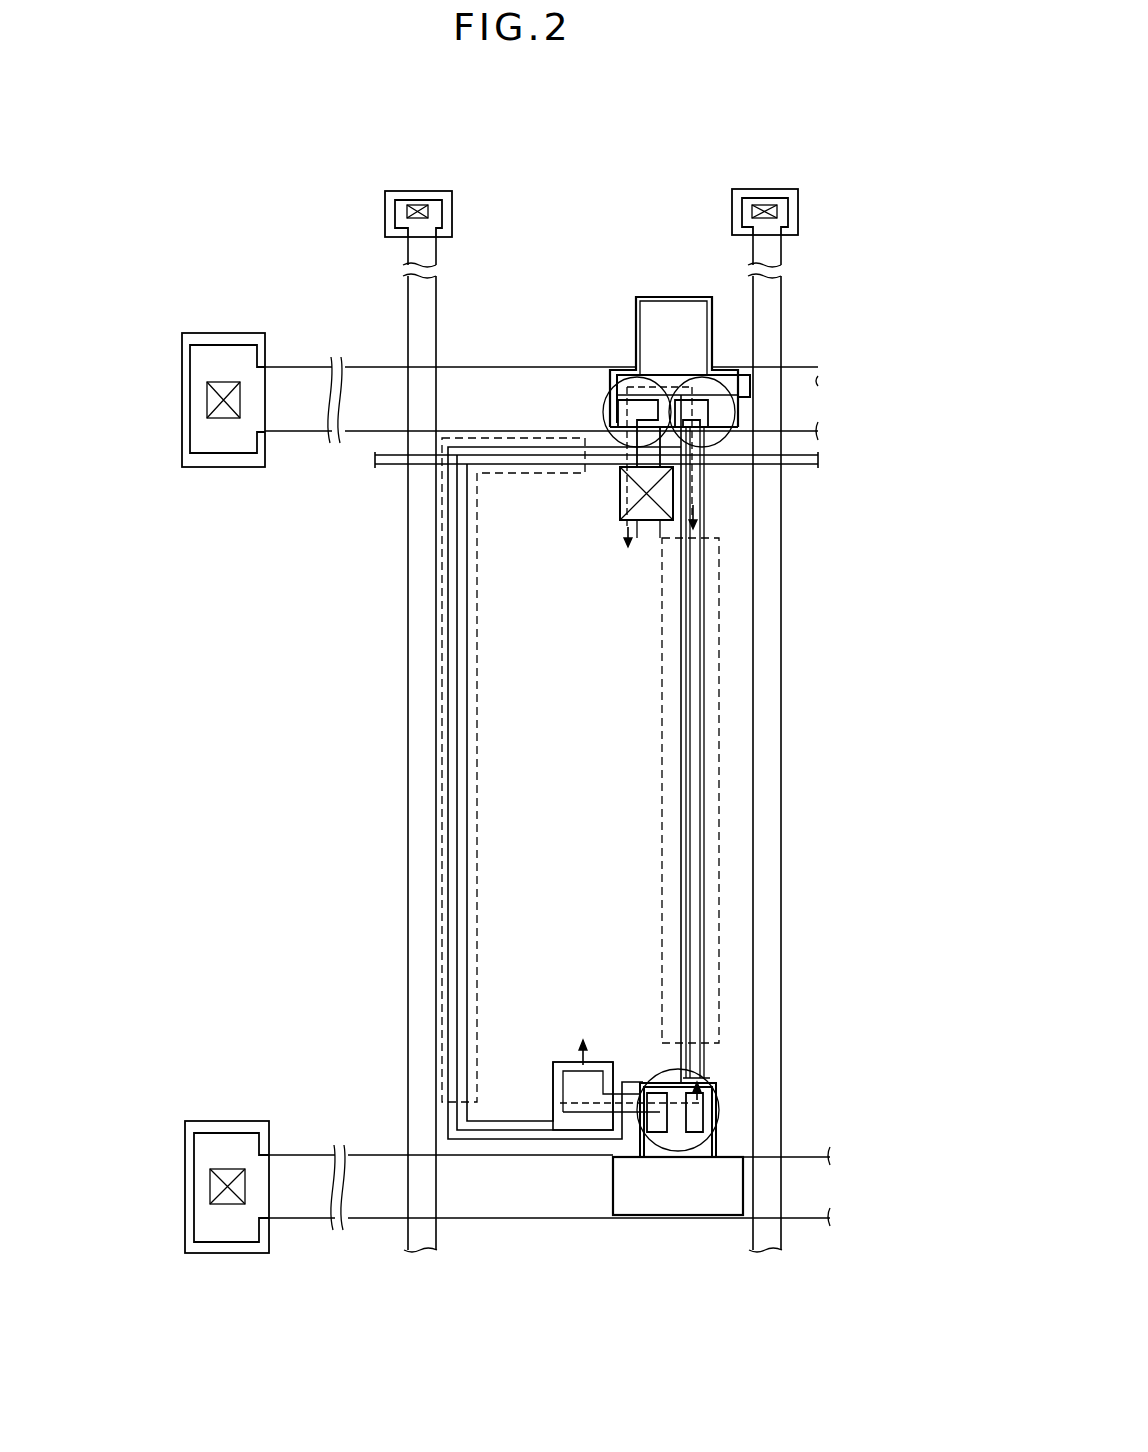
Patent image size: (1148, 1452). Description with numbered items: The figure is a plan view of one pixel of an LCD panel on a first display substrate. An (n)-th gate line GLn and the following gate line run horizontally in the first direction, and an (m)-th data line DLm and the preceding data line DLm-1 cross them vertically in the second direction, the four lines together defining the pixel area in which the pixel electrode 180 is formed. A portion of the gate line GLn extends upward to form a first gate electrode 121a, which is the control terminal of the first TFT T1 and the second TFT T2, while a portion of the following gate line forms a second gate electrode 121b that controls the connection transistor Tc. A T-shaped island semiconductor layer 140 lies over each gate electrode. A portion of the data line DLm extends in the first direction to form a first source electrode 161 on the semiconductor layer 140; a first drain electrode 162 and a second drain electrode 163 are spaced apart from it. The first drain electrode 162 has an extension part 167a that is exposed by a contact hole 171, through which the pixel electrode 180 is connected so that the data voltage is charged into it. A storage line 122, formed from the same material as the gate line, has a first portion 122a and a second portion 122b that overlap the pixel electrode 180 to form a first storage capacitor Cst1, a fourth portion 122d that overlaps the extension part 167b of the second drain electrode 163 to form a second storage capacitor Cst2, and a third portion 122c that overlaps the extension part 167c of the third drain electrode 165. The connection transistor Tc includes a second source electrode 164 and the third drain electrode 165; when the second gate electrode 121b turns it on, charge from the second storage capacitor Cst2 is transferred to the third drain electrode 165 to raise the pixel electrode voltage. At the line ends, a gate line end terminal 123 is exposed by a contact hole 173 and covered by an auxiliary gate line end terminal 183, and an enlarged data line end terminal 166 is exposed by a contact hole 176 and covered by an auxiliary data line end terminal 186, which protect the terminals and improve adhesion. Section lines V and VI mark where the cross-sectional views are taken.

The contact hole 176 is at (418, 205).
The auxiliary data line end terminal 186 is at (385, 212).
The data line end terminal 166 is at (452, 212).
The gate line end terminal 123 is at (222, 345).
The contact hole 173 is at (207, 400).
The auxiliary gate line end terminal 183 is at (222, 467).
The first portion 122a is at (500, 465).
The first source electrode 161 is at (620, 380).
The semiconductor layer 140 is at (612, 384).
The first drain electrode 162 is at (616, 415).
The first gate electrode 121a is at (714, 338).
The second drain electrode 163 is at (710, 415).
The storage line 122 is at (820, 460).
The extension part 167a is at (618, 490).
The extension part 167b is at (704, 494).
The contact hole 171 is at (660, 522).
The fourth portion 122d is at (706, 604).
The second portion 122b is at (466, 632).
The pixel electrode 180 is at (447, 705).
The third portion 122c is at (556, 1062).
The extension part 167c is at (600, 1068).
The second source electrode 164 is at (706, 1094).
The third drain electrode 165 is at (712, 1108).
The second gate electrode 121b is at (712, 1140).
The first TFT T1 is at (640, 372).
The second TFT T2 is at (695, 375).
The connection transistor Tc is at (672, 1160).
The (n)-th gate line GLn is at (808, 385).
The (m)-th data line DLm is at (782, 836).
The (m−1)-th data line DLm-1 is at (408, 835).
The first storage capacitor Cst1 is at (441, 755).
The second storage capacitor Cst2 is at (720, 776).
The line V-V' V is at (665, 476).
The line VI-VI' VI is at (651, 1056).